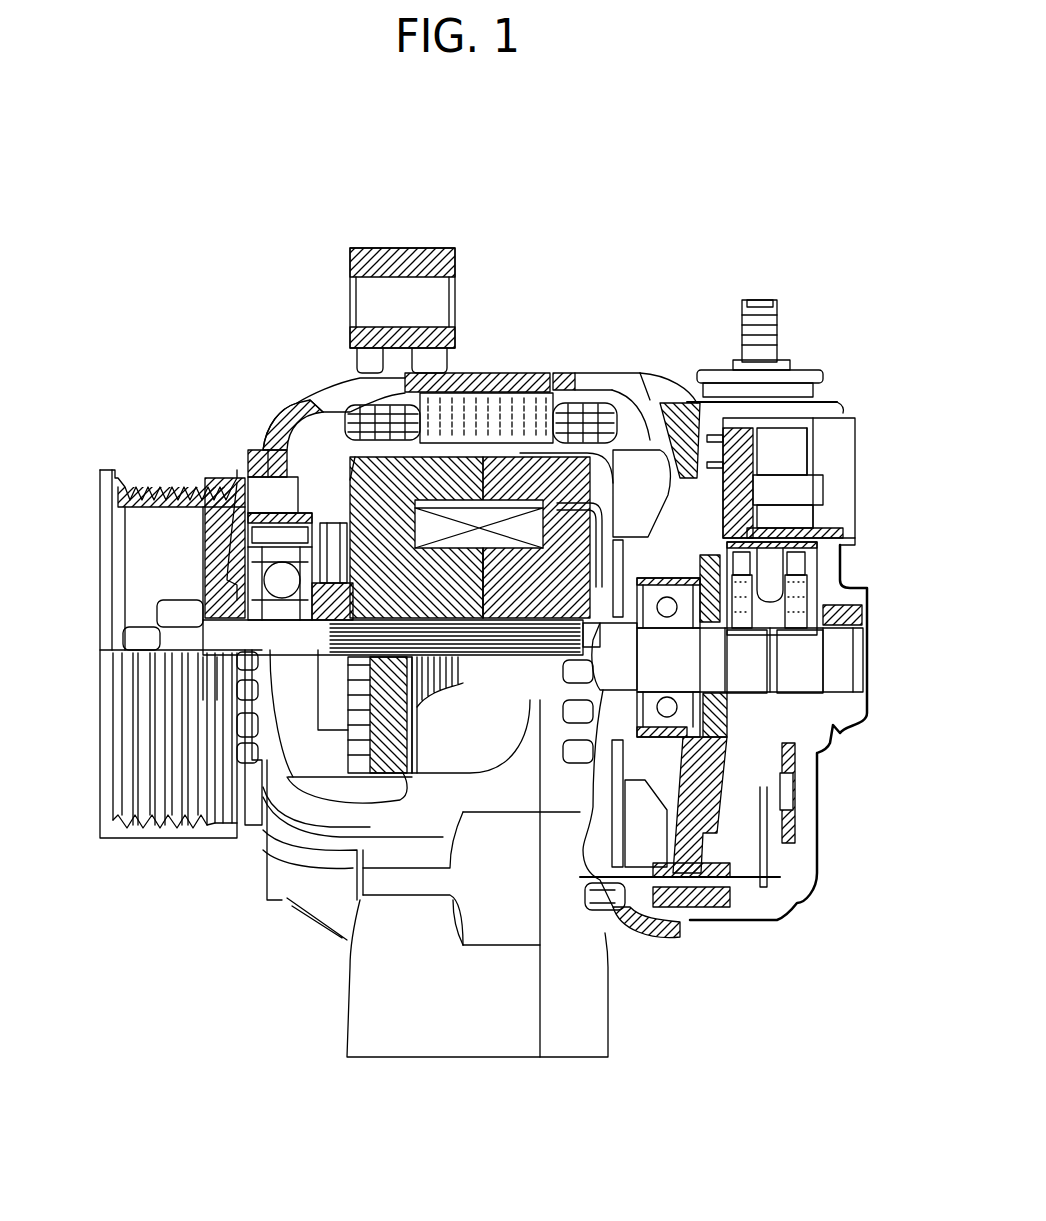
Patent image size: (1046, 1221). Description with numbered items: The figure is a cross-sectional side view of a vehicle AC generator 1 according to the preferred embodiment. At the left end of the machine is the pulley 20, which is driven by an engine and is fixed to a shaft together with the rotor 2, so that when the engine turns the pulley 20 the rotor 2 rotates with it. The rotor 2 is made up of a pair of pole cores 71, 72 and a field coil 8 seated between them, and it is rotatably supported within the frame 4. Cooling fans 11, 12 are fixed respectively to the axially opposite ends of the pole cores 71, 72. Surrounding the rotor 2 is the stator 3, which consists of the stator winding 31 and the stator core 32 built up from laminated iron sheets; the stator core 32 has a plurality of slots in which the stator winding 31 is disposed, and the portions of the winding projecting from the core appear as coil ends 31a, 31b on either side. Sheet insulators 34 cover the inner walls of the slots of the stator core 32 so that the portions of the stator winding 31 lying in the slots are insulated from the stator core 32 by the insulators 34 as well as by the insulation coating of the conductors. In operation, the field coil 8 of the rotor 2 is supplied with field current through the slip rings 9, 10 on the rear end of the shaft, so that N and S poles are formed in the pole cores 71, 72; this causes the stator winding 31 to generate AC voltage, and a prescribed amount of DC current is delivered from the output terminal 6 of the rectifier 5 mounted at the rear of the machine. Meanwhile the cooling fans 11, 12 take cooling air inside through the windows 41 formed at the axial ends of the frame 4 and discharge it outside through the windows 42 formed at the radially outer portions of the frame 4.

The vehicle AC generator 1 is at (741, 216).
The rotor 2 is at (313, 447).
The stator 3 is at (628, 403).
The frame 4 is at (495, 390).
The rectifier 5 is at (787, 790).
The output terminal 6 is at (763, 323).
The field coil 8 is at (488, 512).
The slip ring 9 is at (750, 673).
The slip ring 10 is at (807, 647).
The cooling fan 11 is at (266, 504).
The cooling fan 12 is at (650, 510).
The pulley 20 is at (130, 512).
The stator winding 31 is at (594, 402).
The rear coil end 31a is at (574, 410).
The front coil end 31b is at (355, 397).
The stator core 32 is at (462, 412).
The sheet insulator 34 is at (334, 372).
The window 41 is at (246, 483).
The window 42 is at (312, 393).
The pole core 71 is at (527, 573).
The pole core 72 is at (248, 458).